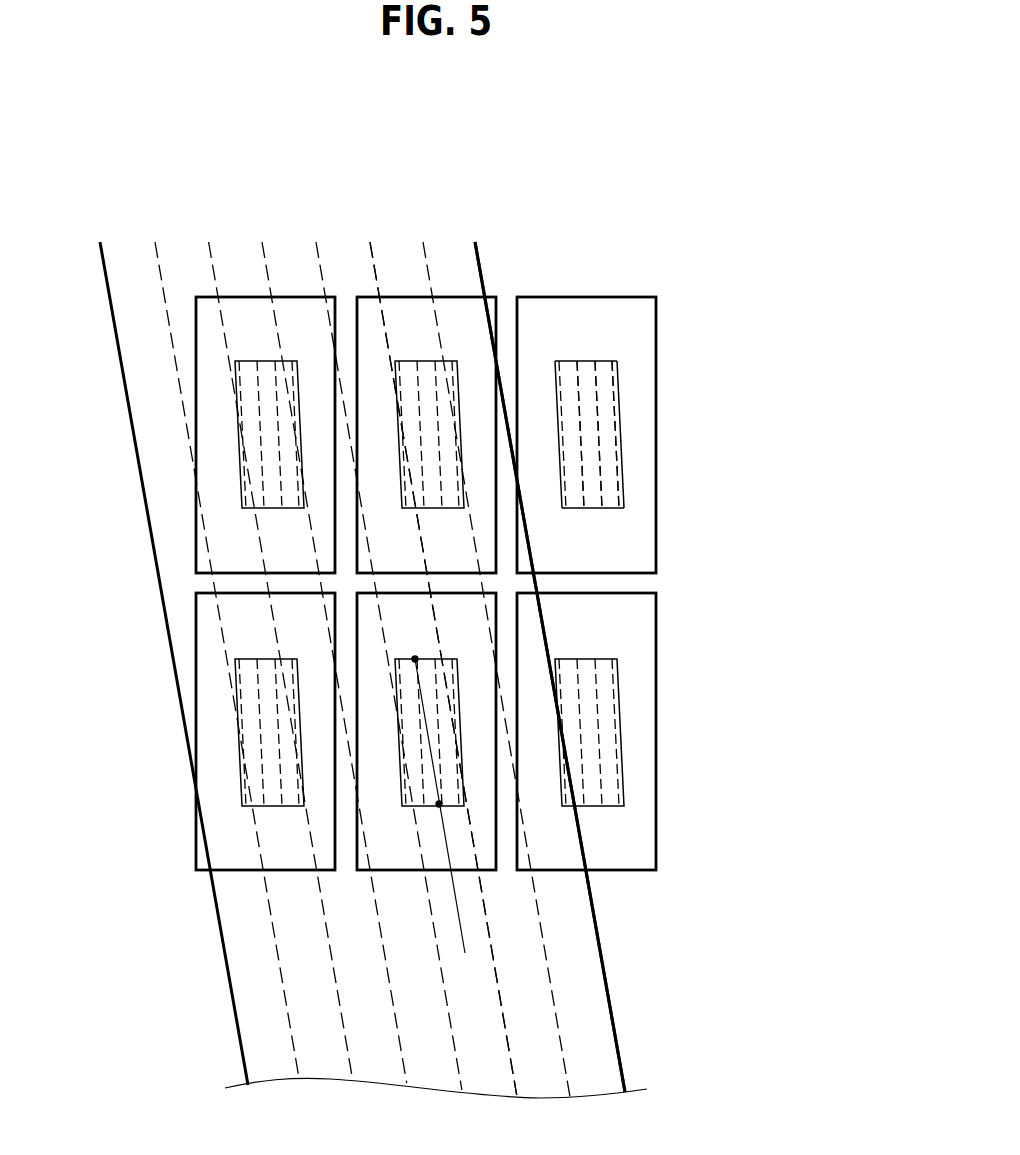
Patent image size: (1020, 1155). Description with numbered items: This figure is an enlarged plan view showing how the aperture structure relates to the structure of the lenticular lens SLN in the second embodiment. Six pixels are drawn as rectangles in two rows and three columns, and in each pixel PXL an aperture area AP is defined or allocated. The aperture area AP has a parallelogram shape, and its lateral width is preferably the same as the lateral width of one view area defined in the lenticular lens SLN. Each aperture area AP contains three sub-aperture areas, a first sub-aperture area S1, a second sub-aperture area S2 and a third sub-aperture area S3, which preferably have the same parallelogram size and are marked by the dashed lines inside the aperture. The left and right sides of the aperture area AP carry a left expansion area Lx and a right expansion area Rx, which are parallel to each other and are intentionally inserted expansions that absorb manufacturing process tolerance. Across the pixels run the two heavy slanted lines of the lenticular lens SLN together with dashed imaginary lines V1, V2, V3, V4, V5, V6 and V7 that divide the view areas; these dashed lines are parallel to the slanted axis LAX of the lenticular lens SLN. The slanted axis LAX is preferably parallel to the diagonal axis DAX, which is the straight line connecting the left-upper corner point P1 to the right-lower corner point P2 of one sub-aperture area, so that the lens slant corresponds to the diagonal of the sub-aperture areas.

The first virtual line V1 is at (126, 253).
The second virtual line V2 is at (183, 253).
The third virtual line V3 is at (238, 253).
The fourth virtual line V4 is at (293, 253).
The fifth virtual line V5 is at (348, 253).
The sixth virtual line V6 is at (400, 253).
The seventh virtual line V7 is at (452, 253).
The aperture area AP is at (695, 191).
The left expansion area Lx is at (555, 387).
The right expansion area Rx is at (617, 387).
The first sub-aperture area S1 is at (565, 373).
The second sub-aperture area S2 is at (582, 373).
The third sub-aperture area S3 is at (603, 373).
The first point P1 is at (415, 659).
The second point P2 is at (439, 804).
The pixel PXL is at (656, 752).
The diagonal axis DAX is at (463, 938).
The slanted axis LAX is at (503, 1012).
The lenticular lens SLN is at (620, 1062).